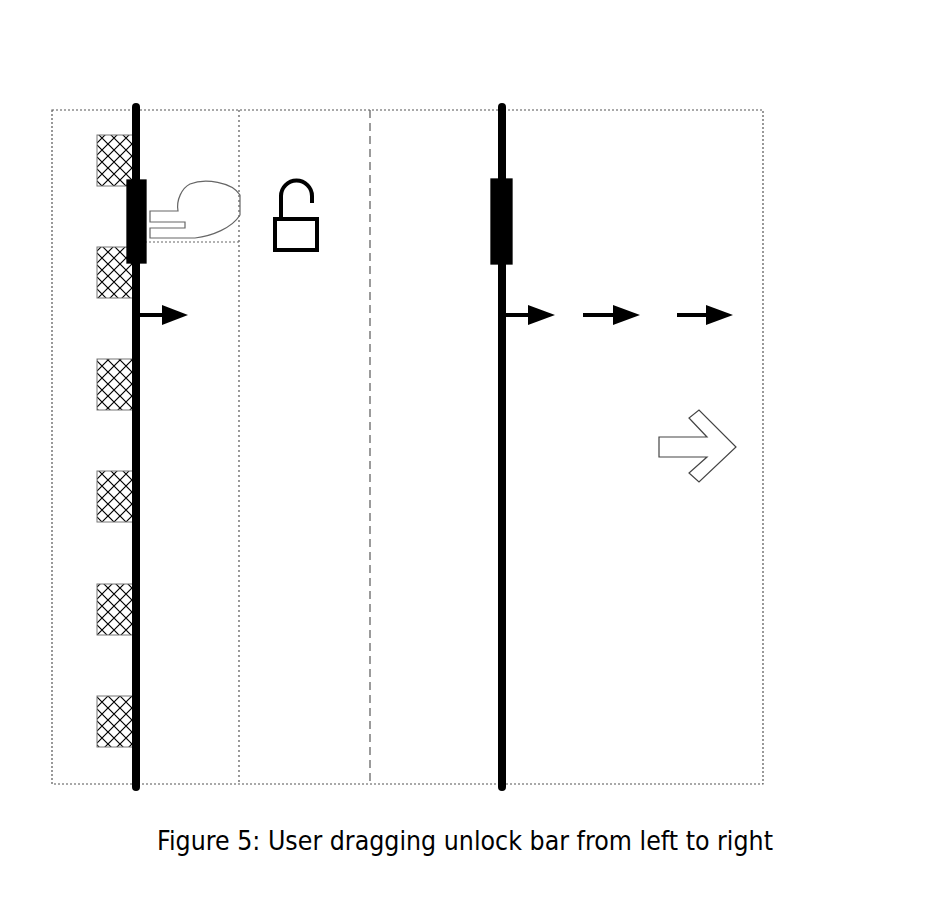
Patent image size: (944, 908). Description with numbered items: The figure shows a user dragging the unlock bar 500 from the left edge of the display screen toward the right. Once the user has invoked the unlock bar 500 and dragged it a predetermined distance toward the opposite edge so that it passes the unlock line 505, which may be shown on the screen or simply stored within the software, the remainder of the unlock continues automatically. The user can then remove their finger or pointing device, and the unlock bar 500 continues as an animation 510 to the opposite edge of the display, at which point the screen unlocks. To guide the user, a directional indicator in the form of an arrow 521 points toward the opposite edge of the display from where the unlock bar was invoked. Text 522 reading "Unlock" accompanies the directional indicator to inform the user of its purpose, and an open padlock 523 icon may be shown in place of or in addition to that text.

The unlock bar 500 is at (142, 127).
The unlock line 505 is at (373, 127).
The animation 510 is at (729, 303).
The arrow 521 is at (165, 333).
The text 522 is at (326, 326).
The open padlock 523 is at (320, 233).